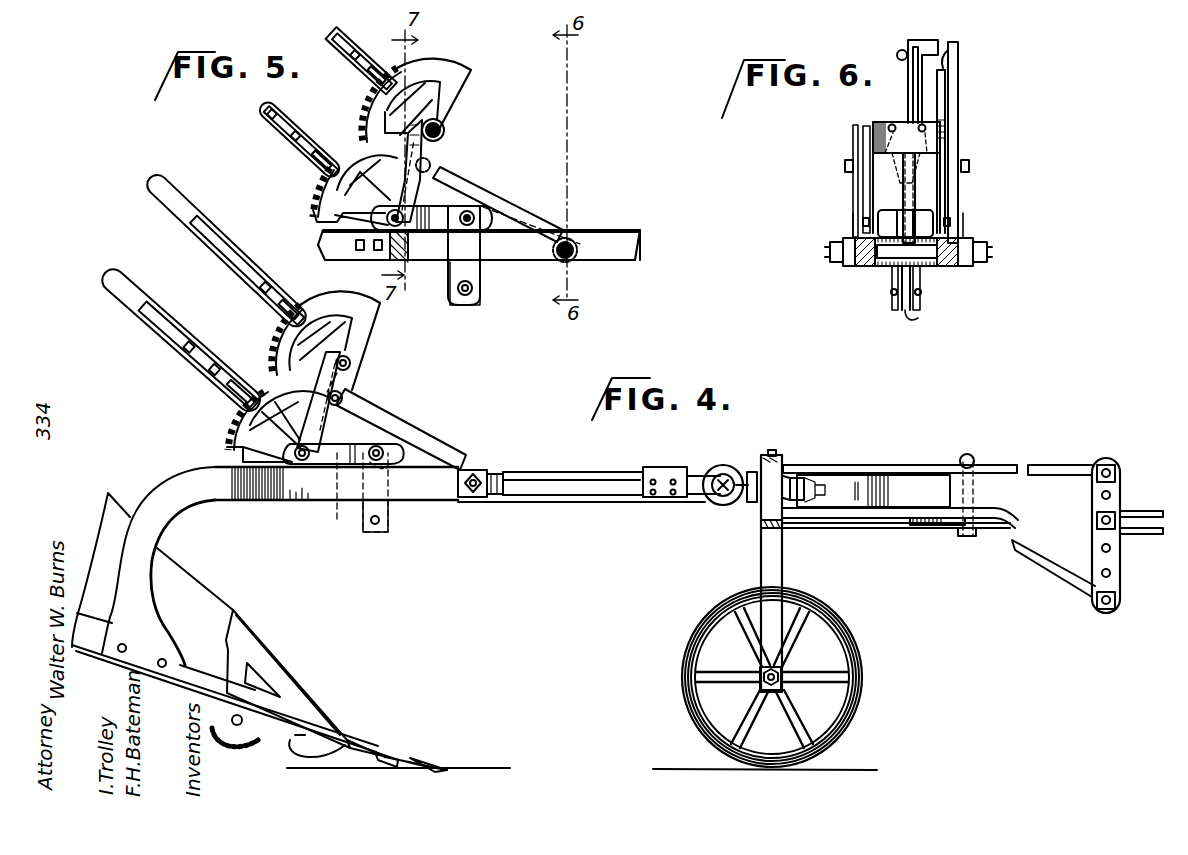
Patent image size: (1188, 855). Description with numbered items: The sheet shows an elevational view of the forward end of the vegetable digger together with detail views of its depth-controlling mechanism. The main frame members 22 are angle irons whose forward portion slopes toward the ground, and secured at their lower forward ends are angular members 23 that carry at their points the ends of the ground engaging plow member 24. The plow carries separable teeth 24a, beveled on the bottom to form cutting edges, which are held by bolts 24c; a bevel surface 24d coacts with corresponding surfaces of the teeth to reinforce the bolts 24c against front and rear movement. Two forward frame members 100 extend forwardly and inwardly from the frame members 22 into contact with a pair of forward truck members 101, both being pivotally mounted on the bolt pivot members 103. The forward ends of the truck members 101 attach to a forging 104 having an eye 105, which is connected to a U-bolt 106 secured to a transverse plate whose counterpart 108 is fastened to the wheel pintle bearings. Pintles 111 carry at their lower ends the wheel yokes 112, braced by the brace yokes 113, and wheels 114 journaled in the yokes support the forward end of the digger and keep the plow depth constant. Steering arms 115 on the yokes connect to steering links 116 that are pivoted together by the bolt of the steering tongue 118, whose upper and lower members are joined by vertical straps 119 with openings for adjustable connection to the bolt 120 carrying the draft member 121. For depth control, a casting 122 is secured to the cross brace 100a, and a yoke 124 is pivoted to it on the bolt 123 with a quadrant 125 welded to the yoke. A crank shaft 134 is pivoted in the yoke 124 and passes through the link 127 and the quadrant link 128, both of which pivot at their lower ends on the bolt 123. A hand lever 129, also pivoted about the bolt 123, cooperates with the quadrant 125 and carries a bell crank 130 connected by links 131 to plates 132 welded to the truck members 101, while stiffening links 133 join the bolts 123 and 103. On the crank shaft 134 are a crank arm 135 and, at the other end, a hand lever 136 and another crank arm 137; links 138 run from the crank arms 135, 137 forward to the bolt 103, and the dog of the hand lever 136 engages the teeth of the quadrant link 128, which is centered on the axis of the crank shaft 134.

In FIG. 4, the main frame member 22 is at (82, 660).
In FIG. 4, the angular member 23 is at (300, 663).
In FIG. 4, the plow member 24 is at (382, 732).
In FIG. 4, the separable teeth 24a is at (443, 765).
In FIG. 4, the bolts 24c is at (278, 737).
In FIG. 4, the bevel surface 24d is at (398, 752).
In FIG. 4, the forward frame member 100 is at (190, 482).
In FIG. 6, the forward frame member 100 is at (858, 268).
In FIG. 5, the cross brace 100a is at (365, 252).
In FIG. 4, the forward truck member 101 is at (603, 452).
In FIG. 6, the forward truck member 101 is at (905, 270).
In FIG. 4, the bolt pivot member 103 is at (466, 500).
In FIG. 5, the bolt pivot member 103 is at (580, 262).
In FIG. 6, the bolt pivot member 103 is at (990, 253).
In FIG. 4, the forging 104 is at (683, 466).
In FIG. 4, the eye 105 is at (740, 452).
In FIG. 4, the U-bolt 106 is at (716, 496).
In FIG. 4, the transverse plate 108 is at (790, 470).
In FIG. 4, the pintle 111 is at (782, 442).
In FIG. 4, the wheel yoke 112 is at (760, 548).
In FIG. 4, the brace yoke 113 is at (760, 522).
In FIG. 4, the wheel 114 is at (678, 650).
In FIG. 4, the steering arm 115 is at (860, 525).
In FIG. 4, the steering link 116 is at (937, 526).
In FIG. 4, the steering tongue 118 is at (902, 508).
In FIG. 4, the vertical strap 119 is at (1118, 492).
In FIG. 4, the bolt 120 is at (1100, 518).
In FIG. 4, the draft member 121 is at (1135, 536).
In FIG. 5, the casting 122 is at (415, 265).
In FIG. 6, the casting 122 is at (892, 210).
In FIG. 4, the bolt 123 is at (302, 453).
In FIG. 5, the bolt 123 is at (385, 222).
In FIG. 6, the bolt 123 is at (860, 223).
In FIG. 4, the yoke 124 is at (335, 364).
In FIG. 5, the yoke 124 is at (444, 125).
In FIG. 6, the yoke 124 is at (874, 122).
In FIG. 4, the quadrant 125 is at (236, 425).
In FIG. 5, the quadrant 125 is at (318, 195).
In FIG. 6, the quadrant 125 is at (905, 190).
In FIG. 4, the link 127 is at (360, 408).
In FIG. 5, the link 127 is at (409, 171).
In FIG. 6, the link 127 is at (868, 183).
In FIG. 4, the quadrant link 128 is at (367, 331).
In FIG. 5, the quadrant link 128 is at (466, 80).
In FIG. 6, the quadrant link 128 is at (948, 112).
In FIG. 4, the hand lever 129 is at (152, 327).
In FIG. 5, the hand lever 129 is at (300, 150).
In FIG. 6, the hand lever 129 is at (908, 93).
In FIG. 4, the bell crank 130 is at (358, 503).
In FIG. 5, the bell crank 130 is at (445, 207).
In FIG. 4, the link 131 is at (355, 518).
In FIG. 5, the link 131 is at (478, 278).
In FIG. 6, the link 131 is at (922, 308).
In FIG. 4, the plate 132 is at (384, 535).
In FIG. 5, the plate 132 is at (482, 298).
In FIG. 6, the plate 132 is at (893, 300).
In FIG. 4, the stiffening link 133 is at (425, 452).
In FIG. 5, the stiffening link 133 is at (538, 230).
In FIG. 6, the stiffening link 133 is at (963, 230).
In FIG. 4, the crank shaft 134 is at (352, 366).
In FIG. 5, the crank shaft 134 is at (446, 140).
In FIG. 4, the crank arm 135 is at (348, 386).
In FIG. 6, the crank arm 135 is at (858, 145).
In FIG. 4, the hand lever 136 is at (192, 232).
In FIG. 5, the hand lever 136 is at (326, 52).
In FIG. 6, the hand lever 136 is at (960, 88).
In FIG. 5, the crank arm 137 is at (440, 163).
In FIG. 6, the crank arm 137 is at (963, 149).
In FIG. 4, the link 138 is at (400, 428).
In FIG. 5, the link 138 is at (492, 198).
In FIG. 6, the link 138 is at (850, 196).